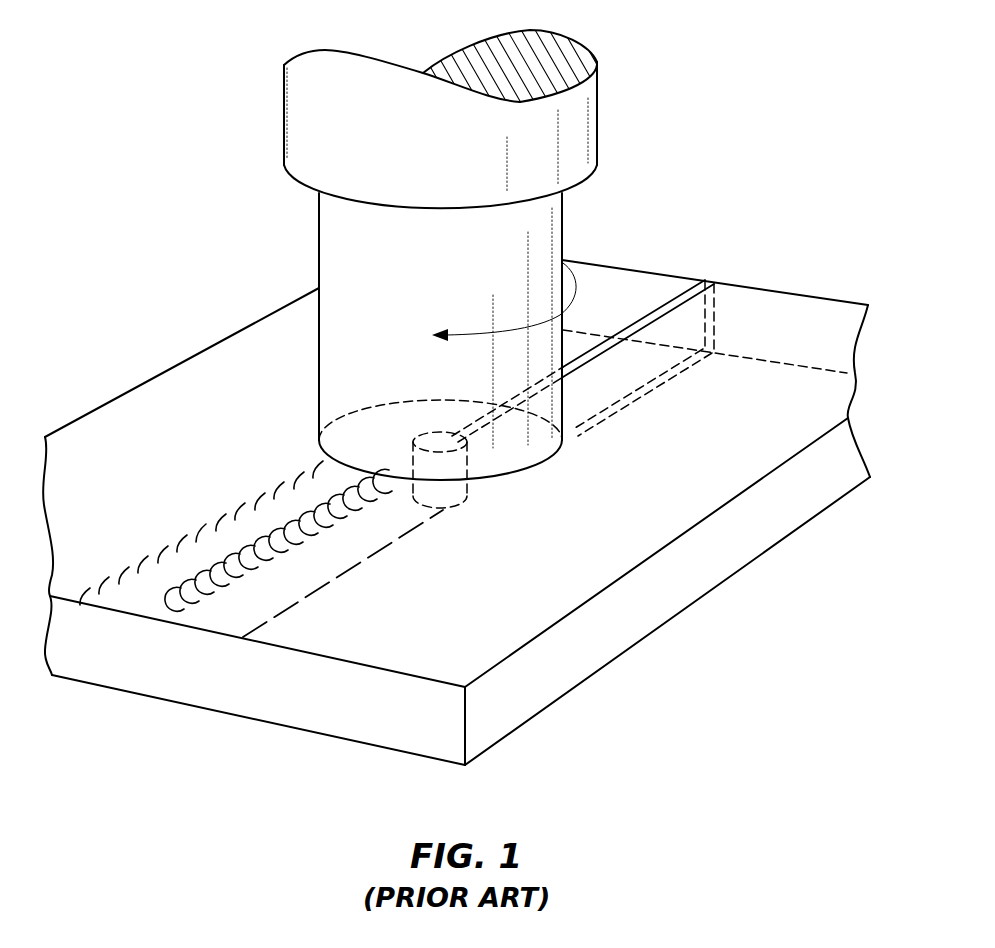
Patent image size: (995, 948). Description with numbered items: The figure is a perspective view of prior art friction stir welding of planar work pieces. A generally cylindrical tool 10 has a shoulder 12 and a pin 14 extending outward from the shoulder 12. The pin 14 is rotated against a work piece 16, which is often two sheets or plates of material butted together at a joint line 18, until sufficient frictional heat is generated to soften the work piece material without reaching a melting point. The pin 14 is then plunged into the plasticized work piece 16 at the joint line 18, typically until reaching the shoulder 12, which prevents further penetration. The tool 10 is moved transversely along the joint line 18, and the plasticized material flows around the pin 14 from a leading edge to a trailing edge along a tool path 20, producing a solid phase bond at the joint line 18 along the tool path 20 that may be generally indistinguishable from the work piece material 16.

The tool 10 is at (565, 240).
The shoulder 12 is at (538, 447).
The pin 14 is at (468, 472).
The work piece 16 is at (788, 315).
The joint line 18 is at (706, 282).
The tool path 20 is at (320, 470).